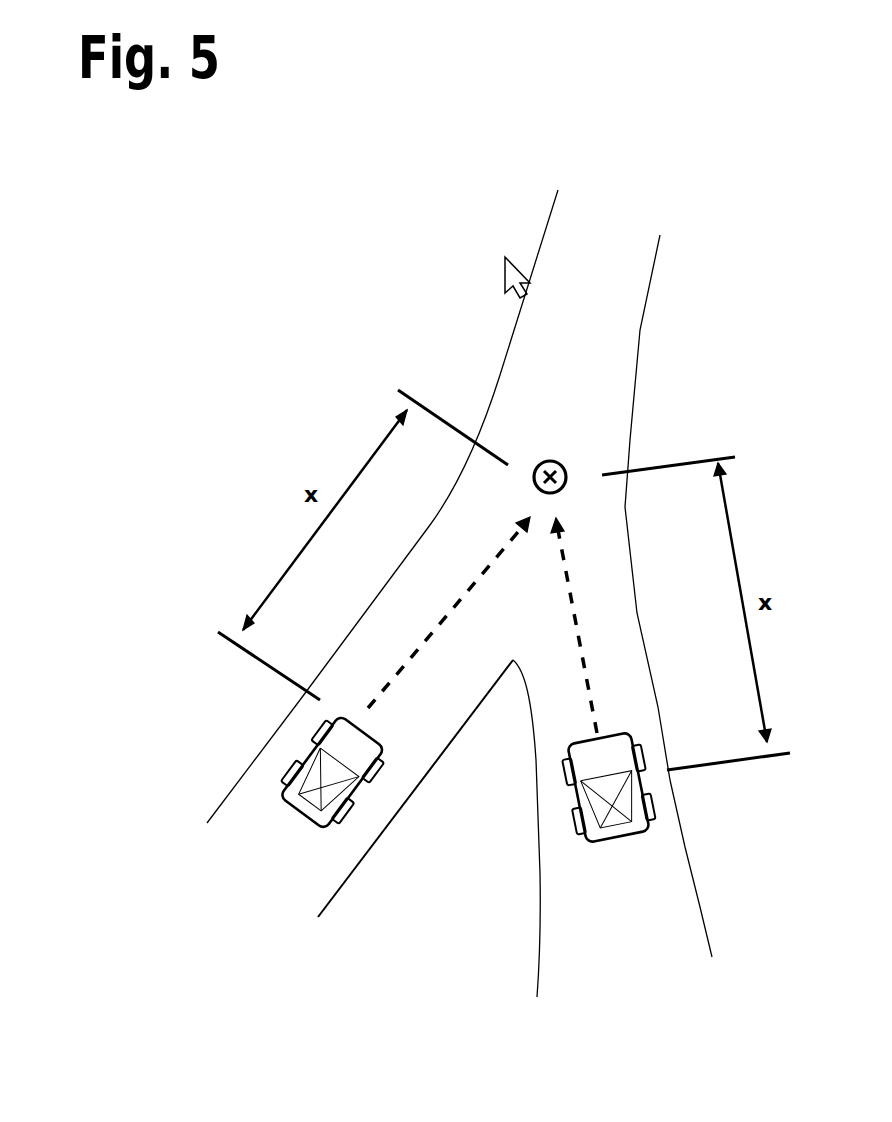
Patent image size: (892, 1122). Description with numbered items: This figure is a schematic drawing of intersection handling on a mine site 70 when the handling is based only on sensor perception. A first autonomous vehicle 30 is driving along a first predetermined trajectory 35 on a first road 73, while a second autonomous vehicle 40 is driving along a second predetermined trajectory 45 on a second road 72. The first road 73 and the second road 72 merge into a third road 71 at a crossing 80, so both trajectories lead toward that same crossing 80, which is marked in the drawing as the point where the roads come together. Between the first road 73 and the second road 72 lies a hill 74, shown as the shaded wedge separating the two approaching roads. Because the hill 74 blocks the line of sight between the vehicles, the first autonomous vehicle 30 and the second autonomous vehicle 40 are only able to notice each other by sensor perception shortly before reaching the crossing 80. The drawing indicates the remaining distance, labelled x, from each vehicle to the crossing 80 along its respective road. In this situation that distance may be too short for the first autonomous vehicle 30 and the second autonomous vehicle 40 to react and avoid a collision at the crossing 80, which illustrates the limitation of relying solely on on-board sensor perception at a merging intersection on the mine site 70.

The first autonomous vehicle 30 is at (627, 853).
The first predetermined trajectory 35 is at (592, 648).
The second autonomous vehicle 40 is at (273, 767).
The second predetermined trajectory 45 is at (437, 633).
The mine site 70 is at (243, 200).
The third road 71 is at (625, 268).
The second road 72 is at (247, 872).
The first road 73 is at (675, 930).
The hill 74 is at (450, 907).
The crossing 80 is at (563, 450).